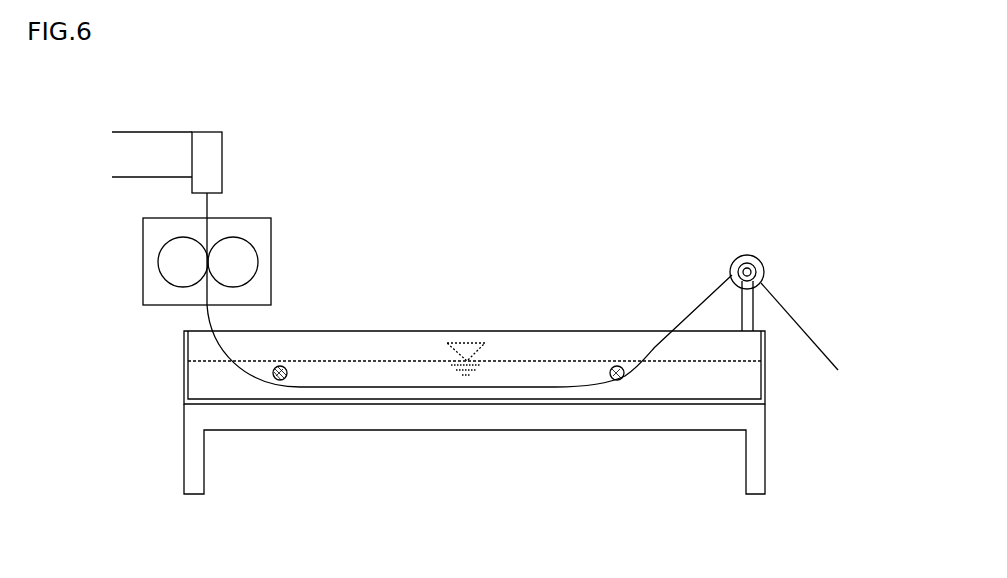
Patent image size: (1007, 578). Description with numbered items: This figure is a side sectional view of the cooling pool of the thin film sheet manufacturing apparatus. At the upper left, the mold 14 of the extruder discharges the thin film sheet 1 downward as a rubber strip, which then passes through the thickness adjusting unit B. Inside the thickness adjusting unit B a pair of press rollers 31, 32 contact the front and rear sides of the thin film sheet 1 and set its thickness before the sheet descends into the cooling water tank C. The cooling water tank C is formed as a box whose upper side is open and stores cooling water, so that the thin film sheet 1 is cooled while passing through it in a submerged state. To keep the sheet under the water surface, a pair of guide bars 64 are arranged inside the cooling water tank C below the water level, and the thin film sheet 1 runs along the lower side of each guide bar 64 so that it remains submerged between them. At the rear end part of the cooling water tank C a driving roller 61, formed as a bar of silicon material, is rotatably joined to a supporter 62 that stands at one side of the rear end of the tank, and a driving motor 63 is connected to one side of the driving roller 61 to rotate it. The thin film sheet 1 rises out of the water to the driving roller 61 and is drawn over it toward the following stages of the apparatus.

The thin film sheet 1 is at (207, 211).
The mold 14 is at (223, 152).
The thickness adjusting unit B is at (143, 258).
The press roller 31 is at (258, 246).
The press roller 32 is at (162, 272).
The cooling water tank C is at (184, 385).
The guide bar 64 is at (287, 373).
The driving motor 63 is at (737, 256).
The driving roller 61 is at (760, 280).
The supporter 62 is at (754, 307).